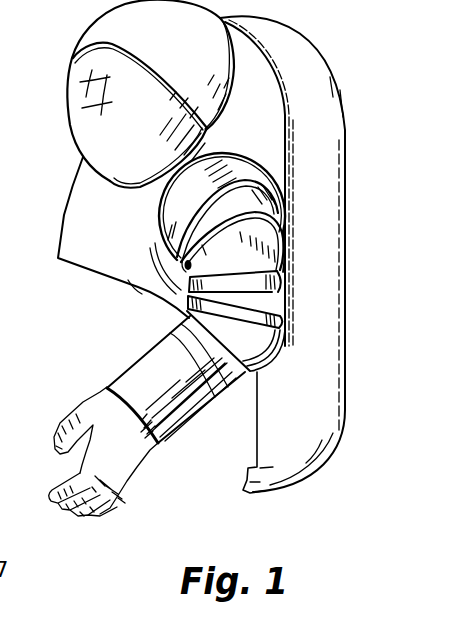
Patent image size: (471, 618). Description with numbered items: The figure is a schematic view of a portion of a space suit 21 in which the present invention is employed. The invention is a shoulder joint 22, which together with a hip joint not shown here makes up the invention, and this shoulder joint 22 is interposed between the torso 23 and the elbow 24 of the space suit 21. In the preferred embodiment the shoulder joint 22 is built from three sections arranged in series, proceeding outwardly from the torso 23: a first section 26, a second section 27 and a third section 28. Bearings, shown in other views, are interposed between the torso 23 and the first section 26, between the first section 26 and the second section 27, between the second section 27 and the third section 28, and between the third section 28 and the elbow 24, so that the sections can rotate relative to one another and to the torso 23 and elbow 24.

The space suit 21 is at (133, 296).
The shoulder joint 22 is at (283, 189).
The torso 23 is at (94, 229).
The elbow 24 is at (293, 319).
The first section 26 is at (214, 158).
The second section 27 is at (280, 243).
The third section 28 is at (280, 292).